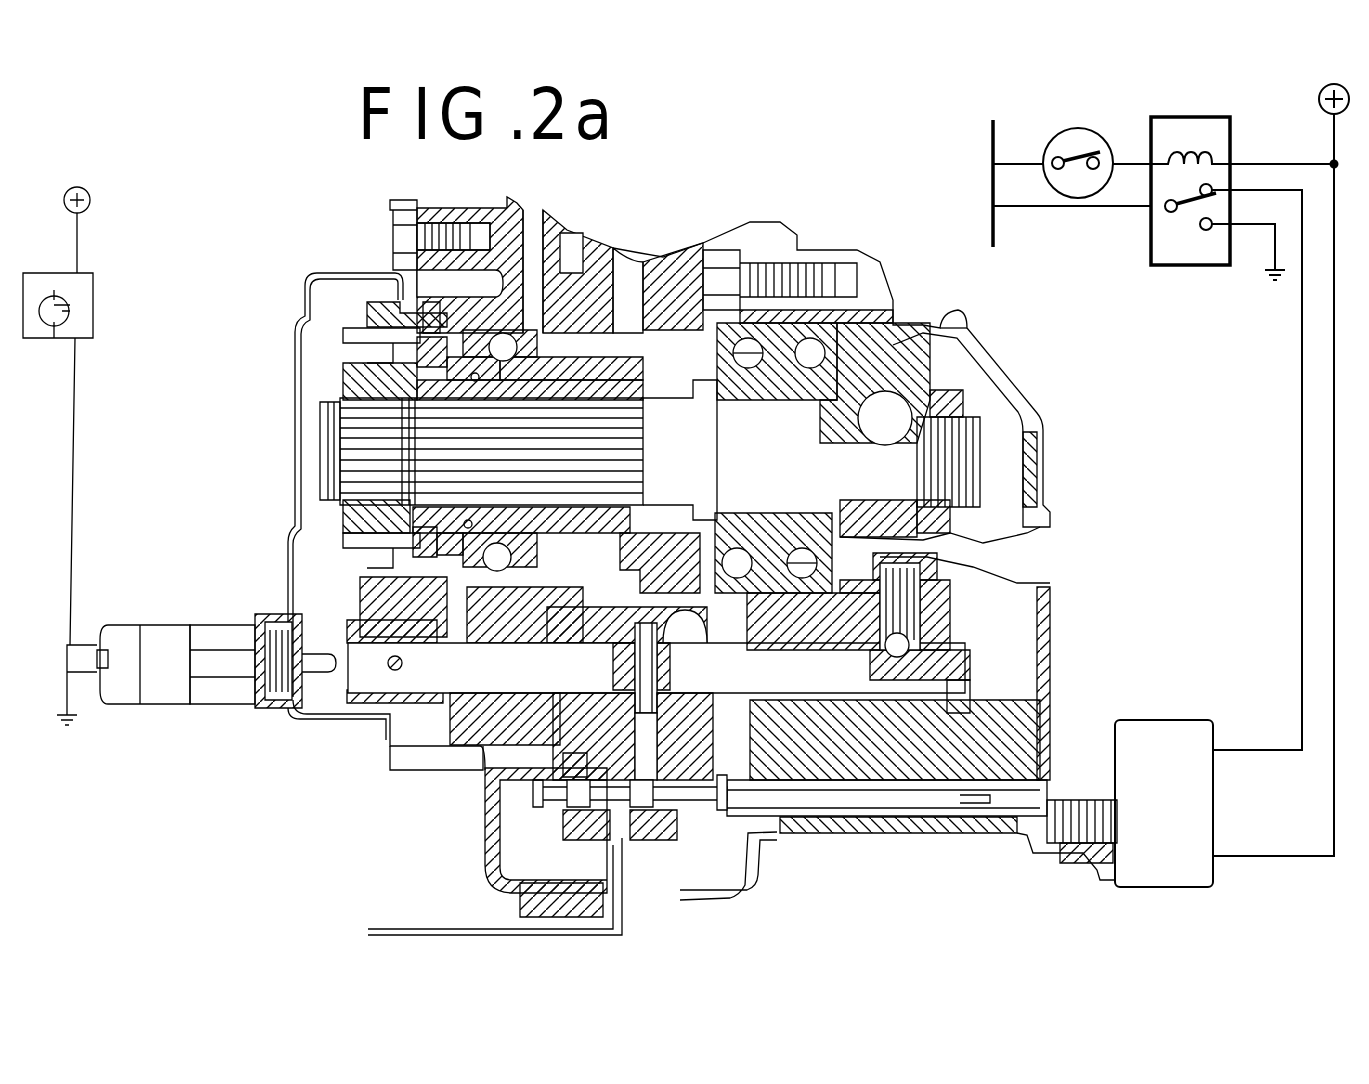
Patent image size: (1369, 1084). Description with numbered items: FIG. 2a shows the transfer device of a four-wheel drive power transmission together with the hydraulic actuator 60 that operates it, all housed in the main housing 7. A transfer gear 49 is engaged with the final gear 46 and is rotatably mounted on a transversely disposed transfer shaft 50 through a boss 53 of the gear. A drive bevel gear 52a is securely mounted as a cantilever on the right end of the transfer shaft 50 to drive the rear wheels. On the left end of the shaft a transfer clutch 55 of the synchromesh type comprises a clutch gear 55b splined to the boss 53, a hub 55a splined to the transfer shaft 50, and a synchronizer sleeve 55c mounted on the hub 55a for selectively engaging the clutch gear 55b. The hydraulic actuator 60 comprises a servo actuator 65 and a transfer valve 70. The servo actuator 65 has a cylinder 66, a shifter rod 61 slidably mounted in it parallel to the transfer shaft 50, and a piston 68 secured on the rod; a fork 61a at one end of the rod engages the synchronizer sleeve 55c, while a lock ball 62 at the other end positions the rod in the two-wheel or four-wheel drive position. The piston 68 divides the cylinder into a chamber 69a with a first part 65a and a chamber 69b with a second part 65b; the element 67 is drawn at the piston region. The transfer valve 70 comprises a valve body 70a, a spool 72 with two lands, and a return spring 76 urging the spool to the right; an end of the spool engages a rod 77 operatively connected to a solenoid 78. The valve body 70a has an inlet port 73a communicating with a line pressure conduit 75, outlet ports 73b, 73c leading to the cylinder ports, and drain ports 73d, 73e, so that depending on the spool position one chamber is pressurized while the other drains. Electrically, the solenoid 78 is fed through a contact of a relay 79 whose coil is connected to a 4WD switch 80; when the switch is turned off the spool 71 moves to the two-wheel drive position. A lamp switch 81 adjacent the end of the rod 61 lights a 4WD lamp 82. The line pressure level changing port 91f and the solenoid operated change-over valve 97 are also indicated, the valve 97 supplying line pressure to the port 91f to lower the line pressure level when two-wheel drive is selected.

The main housing 7 is at (1008, 387).
The final gear 46 is at (600, 255).
The transfer gear 49 is at (645, 560).
The transfer shaft 50 is at (688, 468).
The drive bevel gear 52a is at (903, 343).
The boss 53 is at (583, 383).
The transfer clutch 55 is at (365, 298).
The hub 55a is at (367, 348).
The clutch gear 55b is at (455, 360).
The synchronizer sleeve 55c is at (372, 312).
The hydraulic actuator 60 is at (297, 621).
The shifter rod 61 is at (465, 674).
The fork 61a is at (335, 625).
The lock ball 62 is at (875, 650).
The servo actuator 65 is at (703, 590).
The first part 65a is at (527, 707).
The second part 65b is at (667, 712).
The cylinder 66 is at (623, 612).
The collar 67 is at (665, 676).
The piston 68 is at (600, 637).
The chamber 69a is at (567, 633).
The chamber 69b is at (652, 745).
The transfer valve 70 is at (733, 848).
The valve body 70a is at (520, 883).
The spool 71 is at (632, 777).
The spool 72 is at (533, 792).
The inlet port 73a is at (613, 840).
The outlet port 73b is at (490, 747).
The outlet port 73c is at (655, 753).
The drain port 73d is at (553, 808).
The drain port 73e is at (643, 840).
The line pressure conduit 75 is at (412, 928).
The return spring 76 is at (707, 817).
The rod 77 is at (913, 803).
The solenoid 78 is at (1188, 694).
The relay 79 is at (1168, 266).
The 4WD switch 80 is at (1117, 110).
The lamp switch 81 is at (163, 681).
The 4WD lamp 82 is at (93, 311).
The line pressure level changing port 91f is at (472, 887).
The solenoid operated change-over valve 97 is at (477, 892).